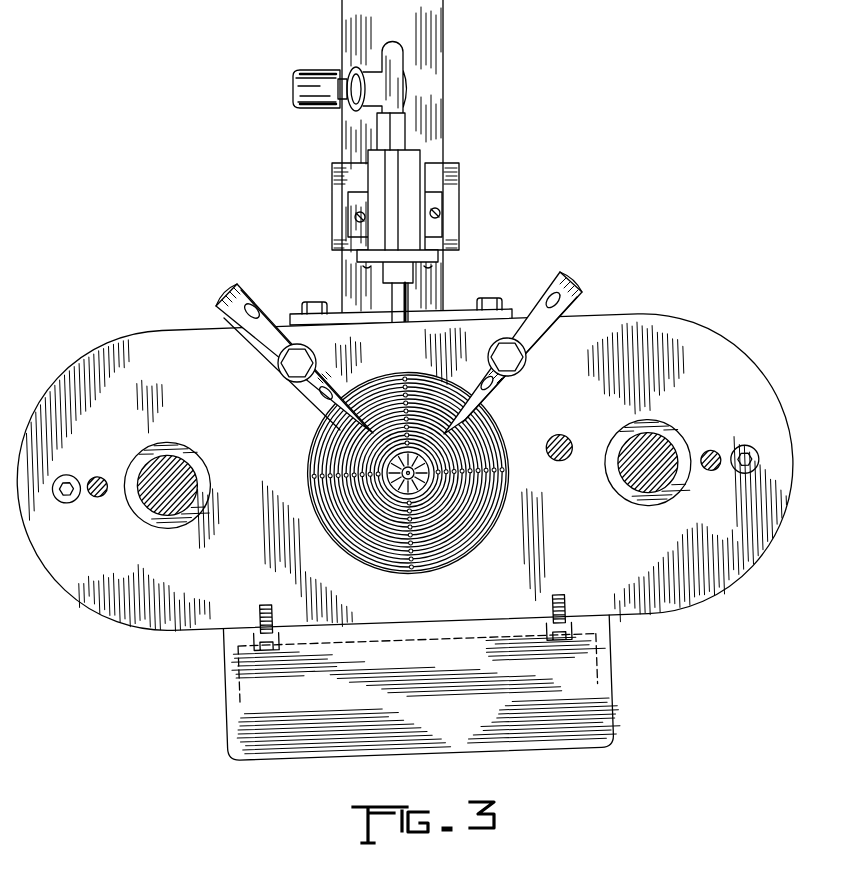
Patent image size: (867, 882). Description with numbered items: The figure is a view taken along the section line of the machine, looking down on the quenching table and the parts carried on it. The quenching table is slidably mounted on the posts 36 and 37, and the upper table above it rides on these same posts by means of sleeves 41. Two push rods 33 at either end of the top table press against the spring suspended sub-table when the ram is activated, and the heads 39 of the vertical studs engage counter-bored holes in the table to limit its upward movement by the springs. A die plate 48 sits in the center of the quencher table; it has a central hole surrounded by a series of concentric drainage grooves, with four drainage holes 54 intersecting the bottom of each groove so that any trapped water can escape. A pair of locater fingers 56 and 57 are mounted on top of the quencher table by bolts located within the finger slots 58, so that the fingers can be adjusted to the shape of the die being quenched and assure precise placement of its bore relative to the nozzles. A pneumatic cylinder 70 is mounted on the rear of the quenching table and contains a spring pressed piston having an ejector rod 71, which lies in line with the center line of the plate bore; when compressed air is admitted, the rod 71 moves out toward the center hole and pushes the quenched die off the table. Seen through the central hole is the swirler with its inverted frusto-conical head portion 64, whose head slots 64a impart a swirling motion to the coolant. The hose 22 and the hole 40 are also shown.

The air supply hose 22 is at (311, 74).
The pneumatic cylinder 70 is at (422, 162).
The ejector rod 71 is at (410, 331).
The finger slots 58 is at (258, 307).
The locater finger 57 is at (556, 288).
The locater finger 56 is at (270, 357).
The drainage holes 54 is at (292, 380).
The post 36 is at (178, 460).
The post 37 is at (660, 440).
The sleeves 41 is at (168, 528).
The push rods 33 is at (99, 478).
The stud heads 39 is at (68, 476).
The hole 40 is at (565, 461).
The die plate 48 is at (457, 562).
The frusto-conical head portion 64 is at (393, 488).
The head slots 64a is at (403, 492).